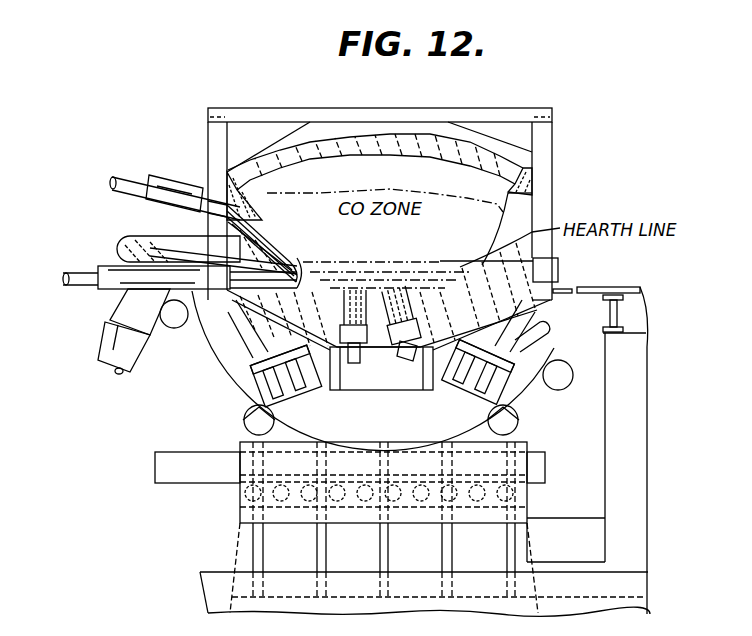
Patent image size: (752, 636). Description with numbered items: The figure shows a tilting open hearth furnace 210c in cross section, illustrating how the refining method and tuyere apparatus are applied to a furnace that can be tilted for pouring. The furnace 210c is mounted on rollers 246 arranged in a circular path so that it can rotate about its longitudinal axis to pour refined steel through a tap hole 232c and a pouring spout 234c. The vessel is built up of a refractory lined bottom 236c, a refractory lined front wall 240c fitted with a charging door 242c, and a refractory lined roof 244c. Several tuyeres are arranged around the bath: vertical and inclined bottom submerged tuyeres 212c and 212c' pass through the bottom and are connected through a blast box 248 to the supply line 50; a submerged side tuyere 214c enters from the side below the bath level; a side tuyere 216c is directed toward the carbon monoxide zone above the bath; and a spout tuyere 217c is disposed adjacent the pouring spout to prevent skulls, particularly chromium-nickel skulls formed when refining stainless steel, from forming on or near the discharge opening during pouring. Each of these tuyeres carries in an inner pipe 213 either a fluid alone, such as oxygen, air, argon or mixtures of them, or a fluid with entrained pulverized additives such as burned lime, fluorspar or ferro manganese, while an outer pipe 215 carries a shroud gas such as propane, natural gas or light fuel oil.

The tilting open hearth furnace 210c is at (556, 133).
The refractory lined roof 244c is at (440, 147).
The refractory lined front wall 240c is at (230, 170).
The charging door 242c is at (525, 213).
The refractory lined bottom 236c is at (527, 276).
The side tuyere 216c is at (177, 182).
The line 50 is at (112, 178).
The tap hole 232c is at (288, 252).
The submerged side tuyere 214c is at (96, 293).
The spout tuyere 217c is at (102, 340).
The pouring spout 234c is at (120, 238).
The inner pipe 213 is at (147, 247).
The outer pipe 215 is at (420, 290).
The blast box 248 is at (413, 380).
The vertical bottom submerged tuyere 212c is at (292, 361).
The inclined bottom submerged tuyere 212c' is at (462, 366).
The rollers 246 is at (170, 329).